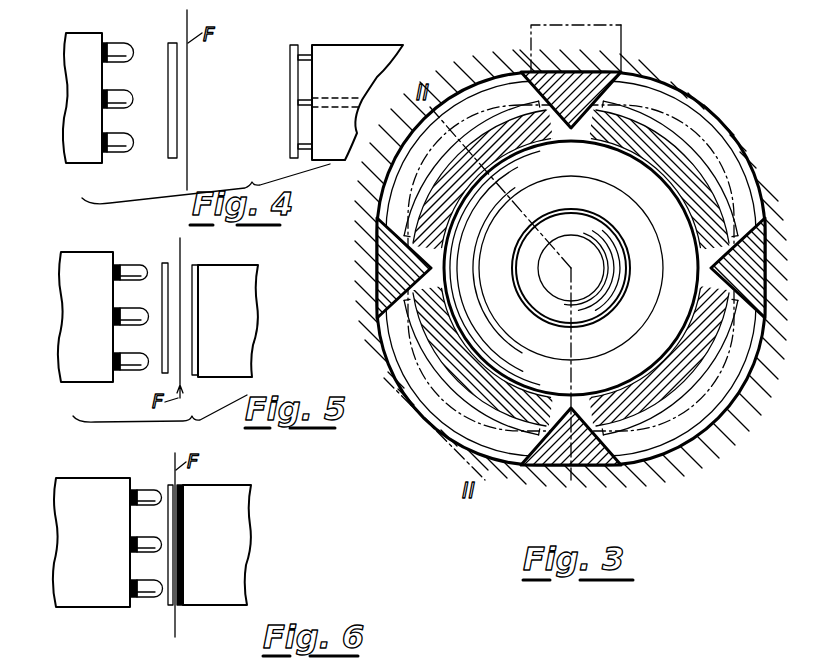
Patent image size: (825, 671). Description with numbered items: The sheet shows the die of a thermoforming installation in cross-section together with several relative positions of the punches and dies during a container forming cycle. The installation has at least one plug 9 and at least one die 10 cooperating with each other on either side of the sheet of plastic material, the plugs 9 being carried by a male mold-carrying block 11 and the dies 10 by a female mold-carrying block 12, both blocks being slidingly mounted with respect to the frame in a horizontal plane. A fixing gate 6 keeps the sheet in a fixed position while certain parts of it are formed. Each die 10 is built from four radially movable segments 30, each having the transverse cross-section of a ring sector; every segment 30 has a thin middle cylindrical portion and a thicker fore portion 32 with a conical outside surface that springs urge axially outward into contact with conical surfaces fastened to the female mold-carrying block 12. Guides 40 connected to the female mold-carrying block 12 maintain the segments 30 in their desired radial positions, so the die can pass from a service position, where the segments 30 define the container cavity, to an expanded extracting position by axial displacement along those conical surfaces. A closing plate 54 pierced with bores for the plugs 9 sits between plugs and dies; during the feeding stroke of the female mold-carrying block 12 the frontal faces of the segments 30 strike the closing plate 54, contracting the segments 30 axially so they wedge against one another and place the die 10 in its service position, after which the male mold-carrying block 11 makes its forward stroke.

In FIG. 4, the fixing gate 6 is at (177, 77).
In FIG. 5, the fixing gate 6 is at (167, 263).
In FIG. 6, the fixing gate 6 is at (169, 485).
In FIG. 3, the plug 9 is at (571, 268).
In FIG. 4, the plug 9 is at (133, 83).
In FIG. 5, the plug 9 is at (140, 297).
In FIG. 6, the plug 9 is at (150, 520).
In FIG. 3, the die 10 is at (564, 293).
In FIG. 4, the male mold-carrying block 11 is at (88, 98).
In FIG. 5, the male mold-carrying block 11 is at (88, 317).
In FIG. 6, the male mold-carrying block 11 is at (91, 542).
In FIG. 3, the female mold-carrying block 12 is at (730, 417).
In FIG. 4, the female mold-carrying block 12 is at (357, 102).
In FIG. 5, the female mold-carrying block 12 is at (228, 321).
In FIG. 6, the female mold-carrying block 12 is at (217, 545).
In FIG. 3, the segments 30 is at (683, 150).
In FIG. 4, the fore portion 32 is at (305, 50).
In FIG. 3, the guides 40 is at (623, 56).
In FIG. 4, the closing plate 54 is at (290, 100).
In FIG. 5, the closing plate 54 is at (199, 265).
In FIG. 6, the closing plate 54 is at (184, 492).